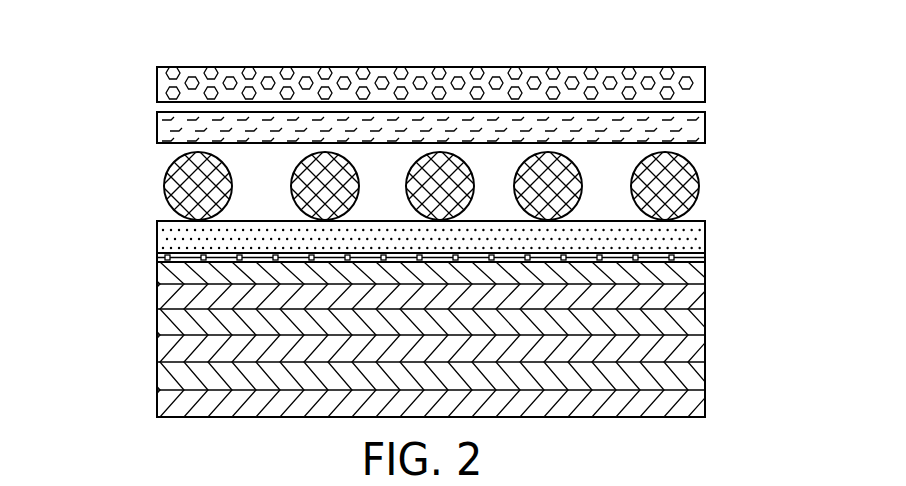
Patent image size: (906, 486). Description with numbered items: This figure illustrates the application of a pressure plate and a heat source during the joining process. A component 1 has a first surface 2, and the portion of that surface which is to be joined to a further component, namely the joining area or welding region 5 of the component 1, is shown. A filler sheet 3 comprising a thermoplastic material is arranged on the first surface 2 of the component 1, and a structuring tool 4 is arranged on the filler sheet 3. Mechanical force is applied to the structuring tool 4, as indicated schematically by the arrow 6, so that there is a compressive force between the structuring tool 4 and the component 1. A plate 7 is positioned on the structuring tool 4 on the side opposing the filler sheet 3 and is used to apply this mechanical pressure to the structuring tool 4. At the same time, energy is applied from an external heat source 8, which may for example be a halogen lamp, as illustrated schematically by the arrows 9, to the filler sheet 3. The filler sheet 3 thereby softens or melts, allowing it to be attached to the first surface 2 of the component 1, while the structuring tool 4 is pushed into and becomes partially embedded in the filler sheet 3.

The component 1 is at (692, 349).
The first surface 2 is at (670, 253).
The filler sheet 3 is at (690, 227).
The structuring tool 4 is at (722, 169).
The welding region 5 is at (423, 301).
The arrow 6 is at (257, 143).
The plate 7 is at (168, 122).
The external heat source 8 is at (660, 82).
The arrows 9 is at (383, 158).